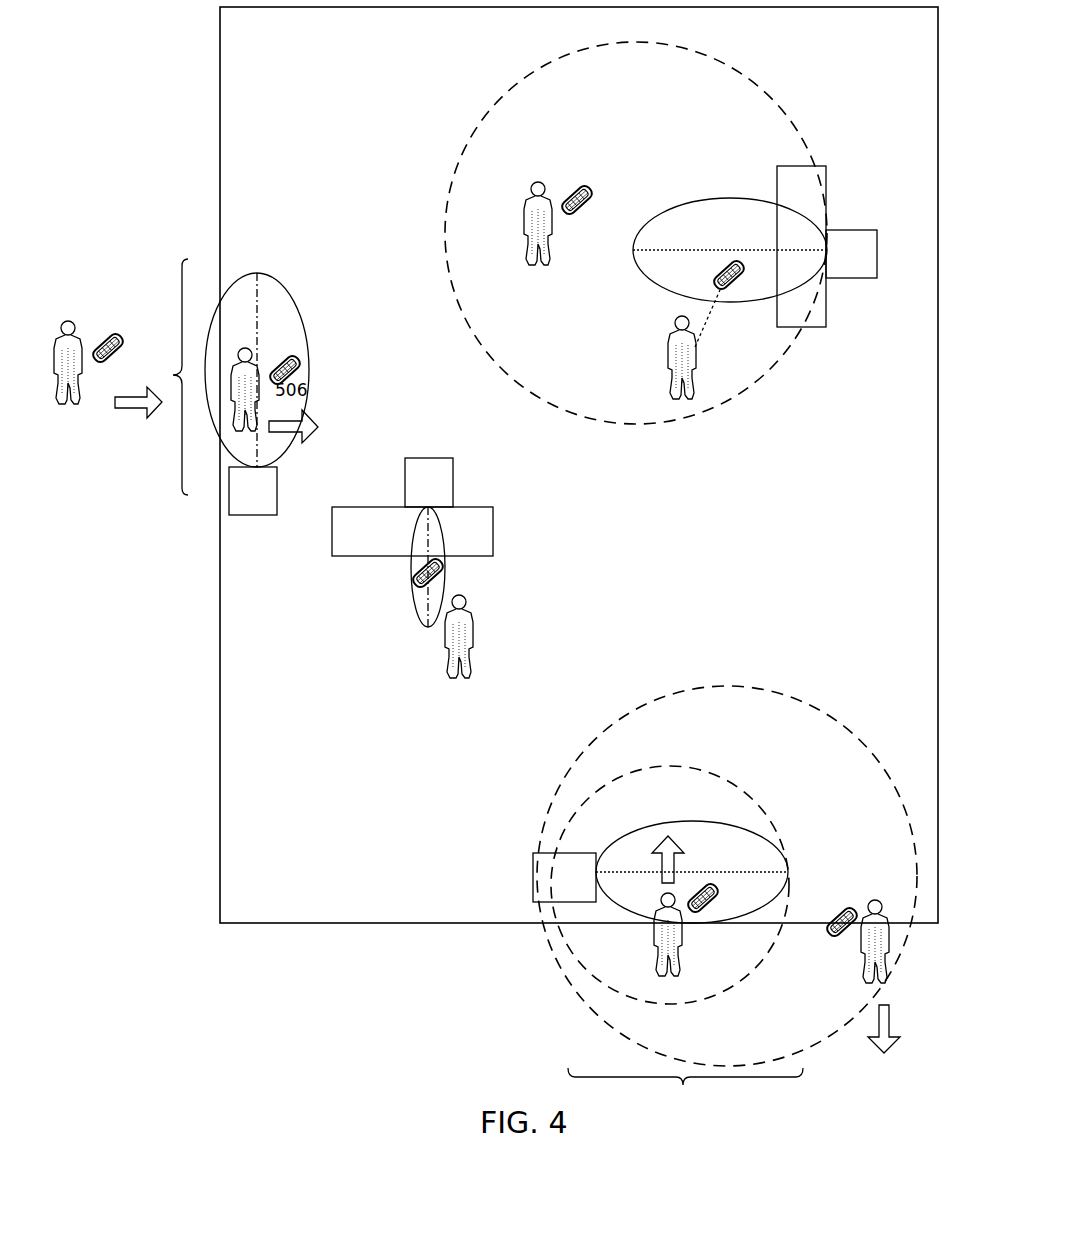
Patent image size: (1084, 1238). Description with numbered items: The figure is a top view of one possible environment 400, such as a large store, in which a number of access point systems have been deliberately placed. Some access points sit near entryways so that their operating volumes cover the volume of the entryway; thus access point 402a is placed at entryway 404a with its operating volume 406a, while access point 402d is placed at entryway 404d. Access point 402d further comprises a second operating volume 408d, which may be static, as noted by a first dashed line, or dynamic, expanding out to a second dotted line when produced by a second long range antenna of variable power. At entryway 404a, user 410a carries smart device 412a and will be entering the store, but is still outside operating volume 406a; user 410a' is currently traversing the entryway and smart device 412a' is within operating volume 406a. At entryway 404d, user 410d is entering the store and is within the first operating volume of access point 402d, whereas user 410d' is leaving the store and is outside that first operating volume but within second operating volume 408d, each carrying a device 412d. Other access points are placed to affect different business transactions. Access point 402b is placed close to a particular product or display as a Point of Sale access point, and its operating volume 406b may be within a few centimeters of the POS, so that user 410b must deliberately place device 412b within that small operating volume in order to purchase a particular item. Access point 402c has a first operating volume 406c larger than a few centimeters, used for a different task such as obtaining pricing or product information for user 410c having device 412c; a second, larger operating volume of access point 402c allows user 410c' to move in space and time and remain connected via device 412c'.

The environment 400 is at (152, 86).
The access point 402a is at (253, 491).
The access point 402b is at (412, 507).
The access point 402c is at (827, 246).
The access point 402d is at (564, 877).
The entryway 404a is at (173, 291).
The entryway 404d is at (718, 822).
The operating volume 406a is at (295, 300).
The operating volume 406b is at (412, 607).
The first operating volume 406c is at (697, 202).
The second operating volume 408d is at (693, 768).
The user 410a is at (94, 339).
The user 410a' is at (237, 379).
The user 410b is at (478, 652).
The user 410c is at (671, 344).
The user 410c' is at (518, 212).
The user 410d is at (636, 934).
The user 410d' is at (849, 917).
The smart device 412a is at (133, 342).
The smart device 412a' is at (322, 360).
The device 412b is at (438, 573).
The device 412c is at (712, 254).
The device 412c' is at (599, 180).
The device 412d is at (723, 890).